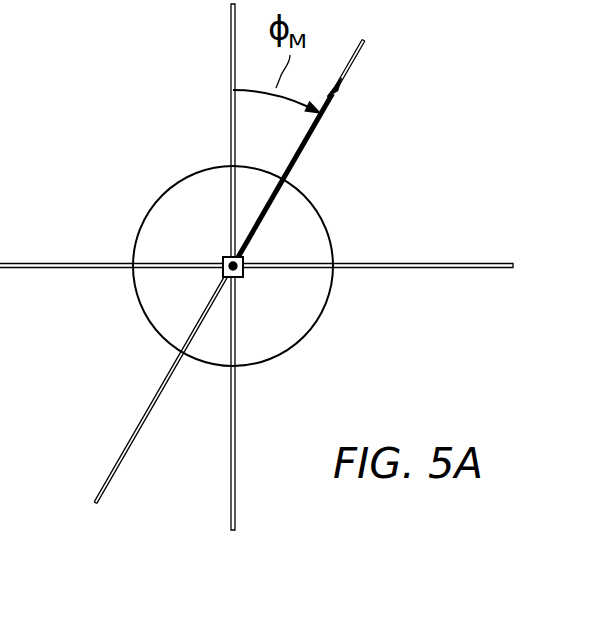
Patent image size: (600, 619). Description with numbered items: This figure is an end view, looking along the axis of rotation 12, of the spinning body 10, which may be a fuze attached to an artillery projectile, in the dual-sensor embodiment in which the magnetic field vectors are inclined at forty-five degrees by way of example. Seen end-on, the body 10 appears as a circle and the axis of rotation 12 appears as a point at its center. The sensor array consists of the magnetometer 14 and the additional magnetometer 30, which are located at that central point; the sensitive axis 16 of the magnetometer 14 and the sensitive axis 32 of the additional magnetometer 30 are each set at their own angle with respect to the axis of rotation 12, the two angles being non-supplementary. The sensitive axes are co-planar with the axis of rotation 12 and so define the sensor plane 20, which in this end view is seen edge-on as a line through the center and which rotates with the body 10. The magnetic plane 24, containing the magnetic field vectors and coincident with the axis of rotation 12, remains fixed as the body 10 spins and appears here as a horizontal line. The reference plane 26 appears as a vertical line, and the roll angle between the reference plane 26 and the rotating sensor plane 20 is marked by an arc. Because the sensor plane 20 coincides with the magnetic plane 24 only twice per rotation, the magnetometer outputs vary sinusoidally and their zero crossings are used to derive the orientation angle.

The spinning body 10 is at (175, 181).
The axis of rotation 12 is at (222, 277).
The magnetometer 14 is at (246, 275).
The sensitive axis 16 is at (302, 152).
The sensor plane 20 is at (360, 50).
The magnetic plane 24 is at (433, 263).
The reference plane 26 is at (231, 32).
The additional magnetometer 30 is at (265, 293).
The sensitive axis 32 is at (321, 172).